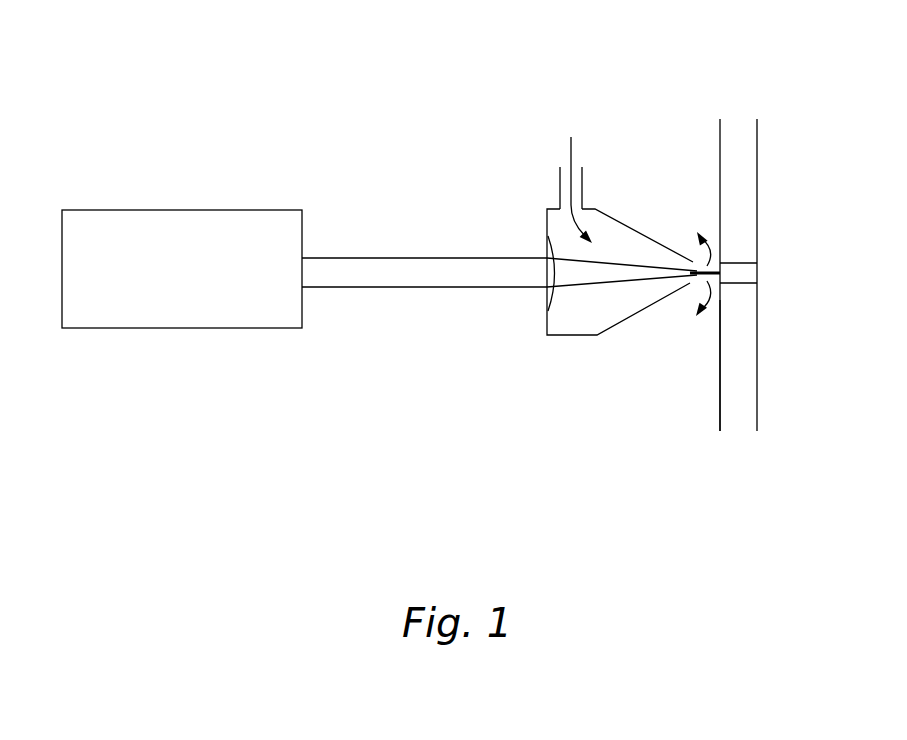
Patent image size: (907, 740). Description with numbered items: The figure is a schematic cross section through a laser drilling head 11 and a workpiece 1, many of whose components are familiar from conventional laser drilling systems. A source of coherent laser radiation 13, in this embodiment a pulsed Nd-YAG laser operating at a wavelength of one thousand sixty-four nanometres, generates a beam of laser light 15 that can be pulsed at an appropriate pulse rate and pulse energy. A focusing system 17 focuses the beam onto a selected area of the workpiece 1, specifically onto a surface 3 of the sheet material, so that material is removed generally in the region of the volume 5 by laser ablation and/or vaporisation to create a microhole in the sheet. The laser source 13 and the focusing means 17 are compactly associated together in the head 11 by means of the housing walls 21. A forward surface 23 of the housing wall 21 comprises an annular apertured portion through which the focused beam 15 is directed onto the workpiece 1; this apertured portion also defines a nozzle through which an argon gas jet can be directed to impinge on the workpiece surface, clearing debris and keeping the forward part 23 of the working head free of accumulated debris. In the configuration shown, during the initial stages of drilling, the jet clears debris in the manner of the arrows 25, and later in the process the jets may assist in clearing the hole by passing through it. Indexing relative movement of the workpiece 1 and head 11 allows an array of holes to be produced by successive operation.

The workpiece 1 is at (740, 135).
The surface 3 is at (720, 383).
The volume 5 is at (750, 272).
The laser drilling head 11 is at (379, 288).
The source of coherent laser radiation 13 is at (140, 227).
The beam of laser light 15 is at (343, 270).
The focusing system 17 is at (545, 248).
The housing walls 21 is at (630, 317).
The forward surface 23 is at (622, 224).
The arrows 25 is at (688, 200).